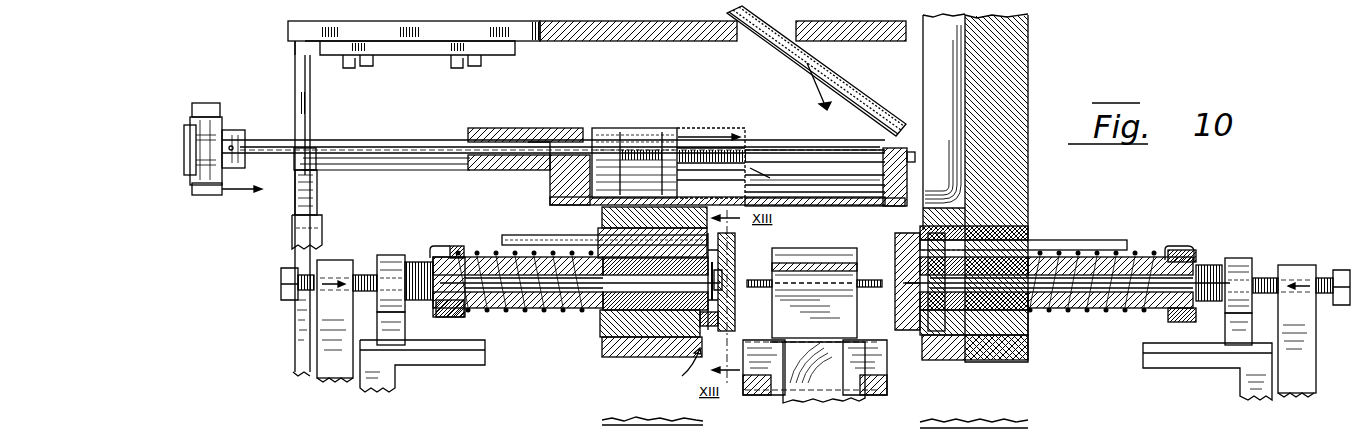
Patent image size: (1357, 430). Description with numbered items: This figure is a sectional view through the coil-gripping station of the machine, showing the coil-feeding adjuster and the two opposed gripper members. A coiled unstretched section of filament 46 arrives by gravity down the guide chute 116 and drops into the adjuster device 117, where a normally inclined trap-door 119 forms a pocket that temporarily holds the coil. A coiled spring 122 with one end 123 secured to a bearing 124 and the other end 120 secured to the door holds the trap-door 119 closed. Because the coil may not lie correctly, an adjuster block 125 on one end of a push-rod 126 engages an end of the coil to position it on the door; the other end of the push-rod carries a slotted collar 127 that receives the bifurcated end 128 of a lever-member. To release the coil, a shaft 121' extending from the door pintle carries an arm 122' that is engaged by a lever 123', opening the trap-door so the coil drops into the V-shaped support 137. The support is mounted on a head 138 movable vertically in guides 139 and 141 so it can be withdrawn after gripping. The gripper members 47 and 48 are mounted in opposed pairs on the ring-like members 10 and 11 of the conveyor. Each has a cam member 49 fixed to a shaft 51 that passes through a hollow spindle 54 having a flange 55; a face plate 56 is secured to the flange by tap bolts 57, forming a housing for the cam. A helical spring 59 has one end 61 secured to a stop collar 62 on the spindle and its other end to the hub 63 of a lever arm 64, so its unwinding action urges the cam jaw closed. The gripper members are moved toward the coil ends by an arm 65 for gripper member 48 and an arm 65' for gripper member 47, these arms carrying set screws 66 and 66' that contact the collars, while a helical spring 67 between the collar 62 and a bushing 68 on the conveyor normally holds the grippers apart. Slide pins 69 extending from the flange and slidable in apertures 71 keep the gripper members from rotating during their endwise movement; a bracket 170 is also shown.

The ring-like member 10 is at (1028, 218).
The ring-like member 11 is at (616, 360).
The filament 46 is at (872, 280).
The gripper member 47 is at (905, 343).
The gripper member 48 is at (679, 370).
The cam member 49 is at (735, 270).
The shaft 51 is at (482, 270).
The hollow spindle 54 is at (580, 310).
The flange 55 is at (735, 242).
The face plate 56 is at (740, 261).
The tap bolts 57 is at (735, 320).
The helical spring 59 is at (416, 262).
The spring end 61 is at (438, 250).
The stop collar 62 is at (460, 246).
The hub 63 is at (389, 256).
The lever arm 64 is at (395, 324).
The arm 65 is at (288, 208).
The arm 65' is at (1297, 342).
The set screw 66 is at (285, 276).
The set screw 66' is at (1333, 274).
The helical spring 67 is at (528, 312).
The bushing 68 is at (594, 312).
The slide pins 69 is at (565, 235).
The apertures 71 is at (1030, 325).
The guide chute 116 is at (862, 101).
The adjuster device 117 is at (783, 140).
The trap-door 119 is at (818, 183).
The spring end 120 is at (772, 179).
The shaft 121' is at (385, 174).
The coiled spring 122 is at (712, 151).
The arm 122' is at (329, 181).
The spring end 123 is at (636, 150).
The lever 123' is at (327, 232).
The bearing 124 is at (586, 140).
The adjuster block 125 is at (645, 132).
The push-rod 126 is at (427, 140).
The slotted collar 127 is at (228, 127).
The bifurcated end 128 is at (200, 196).
The V-shaped support 137 is at (860, 295).
The head 138 is at (832, 398).
The guide 139 is at (887, 392).
The guide 141 is at (762, 396).
The bracket 170 is at (455, 367).